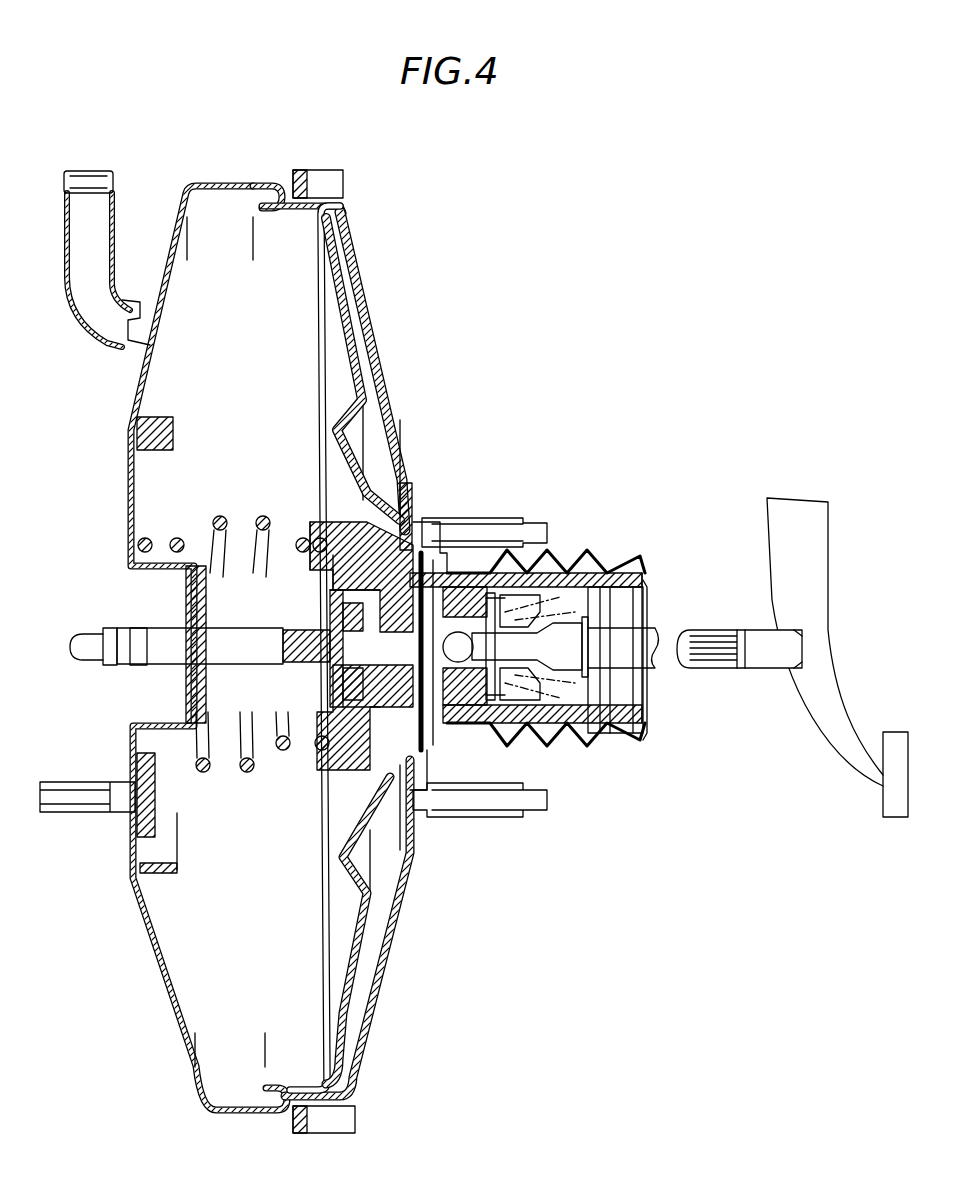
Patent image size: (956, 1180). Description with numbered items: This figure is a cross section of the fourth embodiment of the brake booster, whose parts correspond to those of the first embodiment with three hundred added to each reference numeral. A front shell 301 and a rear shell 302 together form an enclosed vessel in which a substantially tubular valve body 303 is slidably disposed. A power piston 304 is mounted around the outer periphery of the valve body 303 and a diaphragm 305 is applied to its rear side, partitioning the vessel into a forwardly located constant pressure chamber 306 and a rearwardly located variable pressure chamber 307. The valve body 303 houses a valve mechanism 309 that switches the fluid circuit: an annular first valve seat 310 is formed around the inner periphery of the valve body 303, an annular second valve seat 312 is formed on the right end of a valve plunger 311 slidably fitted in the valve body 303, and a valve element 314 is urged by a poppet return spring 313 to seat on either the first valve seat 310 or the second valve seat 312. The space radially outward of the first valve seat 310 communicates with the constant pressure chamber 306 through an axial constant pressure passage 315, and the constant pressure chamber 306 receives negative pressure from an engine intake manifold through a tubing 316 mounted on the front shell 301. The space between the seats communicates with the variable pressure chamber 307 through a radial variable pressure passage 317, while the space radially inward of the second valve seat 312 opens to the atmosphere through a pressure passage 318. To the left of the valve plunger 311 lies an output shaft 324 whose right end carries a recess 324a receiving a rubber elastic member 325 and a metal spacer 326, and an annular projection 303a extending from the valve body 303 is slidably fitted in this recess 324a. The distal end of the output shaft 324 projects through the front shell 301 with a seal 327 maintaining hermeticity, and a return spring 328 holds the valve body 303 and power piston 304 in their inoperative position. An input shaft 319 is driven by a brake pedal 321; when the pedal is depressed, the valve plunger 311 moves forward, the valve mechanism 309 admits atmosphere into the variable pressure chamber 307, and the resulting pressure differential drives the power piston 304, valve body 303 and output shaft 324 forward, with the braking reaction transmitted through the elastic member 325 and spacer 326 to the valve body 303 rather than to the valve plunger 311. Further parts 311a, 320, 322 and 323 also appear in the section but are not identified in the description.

The front shell 301 is at (160, 1003).
The rear shell 302 is at (370, 1020).
The valve body 303 is at (290, 795).
The annular projection 303a is at (340, 690).
The power piston 304 is at (322, 305).
The diaphragm 305 is at (337, 288).
The constant pressure chamber 306 is at (198, 370).
The variable pressure chamber 307 is at (376, 398).
The valve mechanism 309 is at (487, 570).
The first valve seat 310 is at (480, 545).
The valve plunger 311 is at (490, 700).
The ball joint 311a is at (428, 647).
The second valve seat 312 is at (540, 700).
The poppet return spring 313 is at (592, 703).
The valve element 314 is at (512, 720).
The constant pressure passage 315 is at (292, 575).
The tubing 316 is at (112, 222).
The variable pressure passage 317 is at (477, 795).
The pressure passage 318 is at (635, 743).
The input shaft 319 is at (718, 670).
The boot 320 is at (600, 540).
The brake pedal 321 is at (893, 800).
The diaphragm plate flange 322 is at (445, 775).
The bearing seal 323 is at (318, 752).
The output shaft 324 is at (230, 745).
The recess 324a is at (305, 650).
The elastic member 325 is at (330, 620).
The spacer 326 is at (335, 600).
The seal 327 is at (210, 585).
The return spring 328 is at (220, 512).